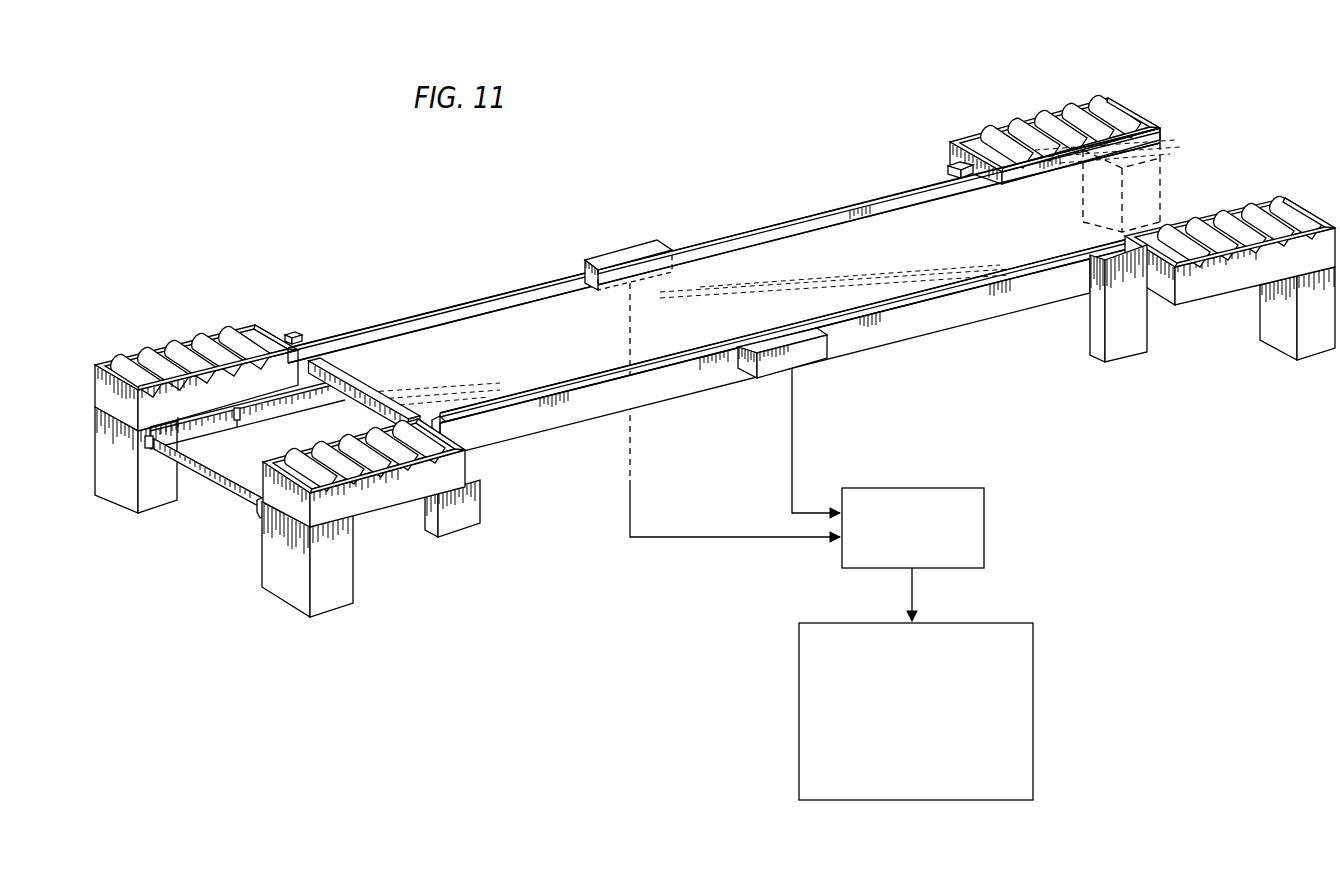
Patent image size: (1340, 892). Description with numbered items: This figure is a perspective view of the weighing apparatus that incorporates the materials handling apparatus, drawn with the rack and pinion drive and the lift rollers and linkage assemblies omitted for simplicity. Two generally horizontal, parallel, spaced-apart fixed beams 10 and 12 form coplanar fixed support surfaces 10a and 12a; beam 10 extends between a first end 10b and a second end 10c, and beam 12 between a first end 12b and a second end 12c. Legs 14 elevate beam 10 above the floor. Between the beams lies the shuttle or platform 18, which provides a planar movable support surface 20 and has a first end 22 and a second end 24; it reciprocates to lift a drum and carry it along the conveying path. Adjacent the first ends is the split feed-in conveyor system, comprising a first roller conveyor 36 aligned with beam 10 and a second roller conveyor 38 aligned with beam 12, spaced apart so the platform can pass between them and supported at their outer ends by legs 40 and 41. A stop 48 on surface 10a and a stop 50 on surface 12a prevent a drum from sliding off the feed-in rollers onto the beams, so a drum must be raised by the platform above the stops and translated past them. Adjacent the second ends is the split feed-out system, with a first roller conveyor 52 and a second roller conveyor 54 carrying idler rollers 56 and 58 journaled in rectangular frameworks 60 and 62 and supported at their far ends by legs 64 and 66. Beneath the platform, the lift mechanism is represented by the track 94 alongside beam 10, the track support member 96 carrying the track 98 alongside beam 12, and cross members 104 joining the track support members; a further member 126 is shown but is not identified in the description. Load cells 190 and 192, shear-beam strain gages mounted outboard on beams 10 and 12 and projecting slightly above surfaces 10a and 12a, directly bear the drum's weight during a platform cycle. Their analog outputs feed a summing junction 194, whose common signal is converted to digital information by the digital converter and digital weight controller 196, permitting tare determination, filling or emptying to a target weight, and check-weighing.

The beam 10 is at (968, 317).
The fixed support surface 10a is at (707, 347).
The first end of beam 10b is at (472, 392).
The second end of beam 10c is at (1127, 243).
The beam 12 is at (528, 287).
The fixed support surface 12a is at (737, 228).
The first end of beam 12b is at (325, 342).
The second end of beam 12c is at (947, 153).
The legs 14 is at (468, 520).
The shuttle or platform 18 is at (788, 243).
The movable support surface 20 is at (591, 347).
The first end of platform 22 is at (397, 398).
The second end of platform 24 is at (1185, 175).
The first roller conveyor 36 is at (246, 531).
The second roller conveyor 38 is at (178, 328).
The leg 40 is at (328, 600).
The leg 41 is at (158, 500).
The stop 48 is at (448, 430).
The stop 50 is at (294, 332).
The first roller conveyor 52 is at (1230, 261).
The second roller conveyor 54 is at (1055, 112).
The idler rollers 56 is at (1242, 220).
The idler rollers 58 is at (1043, 118).
The rectangular framework 60 is at (1203, 288).
The rectangular framework 62 is at (962, 137).
The leg 64 is at (1285, 340).
The leg 66 is at (1147, 163).
The track 94 is at (260, 502).
The track support member 96 is at (312, 411).
The track 98 is at (147, 443).
The cross members 104 is at (207, 493).
The transverse bar 126 is at (365, 396).
The load cell 190 is at (813, 350).
The load cell 192 is at (640, 238).
The summing junction 194 is at (985, 528).
The digital converter and digital weight controller 196 is at (1035, 728).